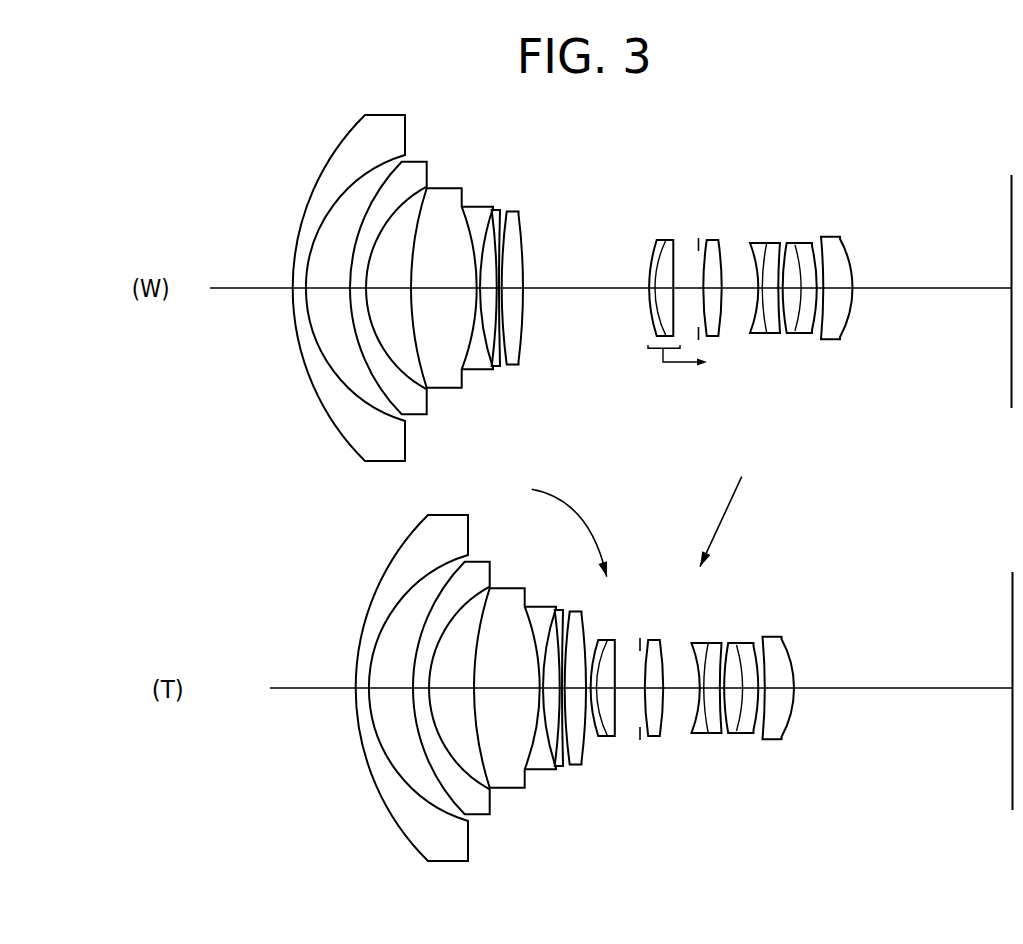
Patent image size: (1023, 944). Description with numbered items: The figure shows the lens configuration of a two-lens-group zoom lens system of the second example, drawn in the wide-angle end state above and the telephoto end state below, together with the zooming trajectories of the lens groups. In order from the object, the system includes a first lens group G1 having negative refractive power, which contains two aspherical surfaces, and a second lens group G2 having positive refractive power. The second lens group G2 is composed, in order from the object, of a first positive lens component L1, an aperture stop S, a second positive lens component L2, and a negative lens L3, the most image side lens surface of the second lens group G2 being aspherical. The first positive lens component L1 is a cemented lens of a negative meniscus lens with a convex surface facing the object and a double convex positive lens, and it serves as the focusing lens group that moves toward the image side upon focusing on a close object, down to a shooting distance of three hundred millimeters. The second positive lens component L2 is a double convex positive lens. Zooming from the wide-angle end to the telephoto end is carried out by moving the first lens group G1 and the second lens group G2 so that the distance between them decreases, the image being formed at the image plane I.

The first lens group G1 is at (538, 460).
The second lens group G2 is at (643, 402).
The first positive lens component L1 is at (680, 227).
The second positive lens component L2 is at (713, 238).
The negative lens L3 is at (765, 241).
The aperture stop S is at (693, 238).
The image plane I is at (1010, 203).